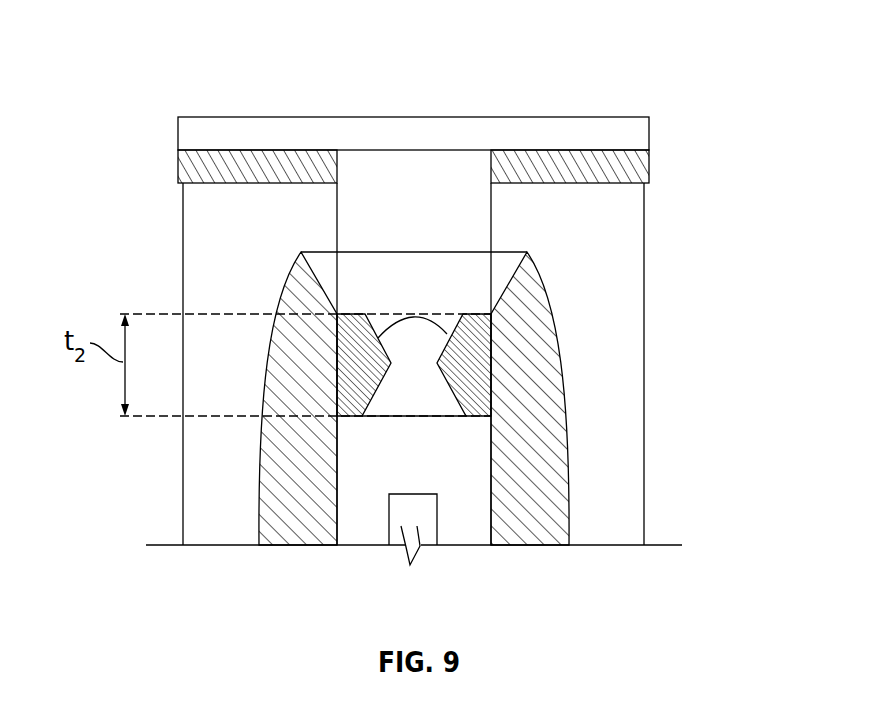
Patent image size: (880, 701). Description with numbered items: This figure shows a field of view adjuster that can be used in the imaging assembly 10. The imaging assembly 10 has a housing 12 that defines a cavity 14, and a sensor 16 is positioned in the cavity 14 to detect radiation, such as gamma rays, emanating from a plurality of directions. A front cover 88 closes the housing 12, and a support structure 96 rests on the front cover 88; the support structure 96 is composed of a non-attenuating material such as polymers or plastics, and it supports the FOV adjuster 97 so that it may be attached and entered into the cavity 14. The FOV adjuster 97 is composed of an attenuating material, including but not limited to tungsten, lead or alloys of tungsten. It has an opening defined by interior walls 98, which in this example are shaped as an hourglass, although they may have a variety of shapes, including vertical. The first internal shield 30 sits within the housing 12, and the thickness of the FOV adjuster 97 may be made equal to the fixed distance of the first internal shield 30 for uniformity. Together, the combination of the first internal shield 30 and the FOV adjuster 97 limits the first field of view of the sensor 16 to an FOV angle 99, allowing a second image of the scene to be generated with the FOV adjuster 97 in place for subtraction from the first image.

The imaging assembly 10 is at (454, 295).
The housing 12 is at (644, 258).
The cavity 14 is at (490, 455).
The sensor 16 is at (401, 546).
The first internal shield 30 is at (283, 487).
The front cover 88 is at (649, 166).
The support structure 96 is at (550, 96).
The FOV adjuster 97 is at (431, 397).
The interior walls 98 is at (377, 394).
The FOV angle 99 is at (414, 323).